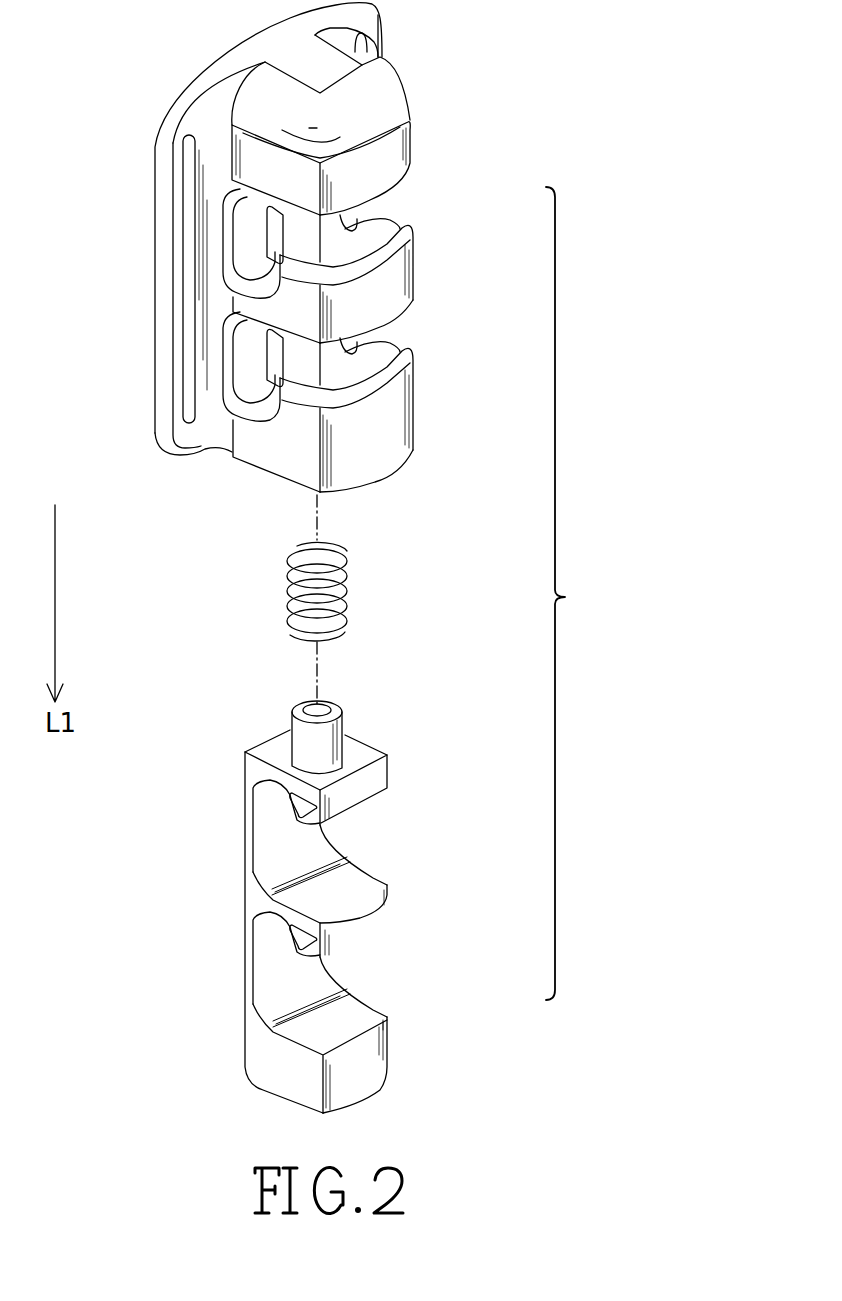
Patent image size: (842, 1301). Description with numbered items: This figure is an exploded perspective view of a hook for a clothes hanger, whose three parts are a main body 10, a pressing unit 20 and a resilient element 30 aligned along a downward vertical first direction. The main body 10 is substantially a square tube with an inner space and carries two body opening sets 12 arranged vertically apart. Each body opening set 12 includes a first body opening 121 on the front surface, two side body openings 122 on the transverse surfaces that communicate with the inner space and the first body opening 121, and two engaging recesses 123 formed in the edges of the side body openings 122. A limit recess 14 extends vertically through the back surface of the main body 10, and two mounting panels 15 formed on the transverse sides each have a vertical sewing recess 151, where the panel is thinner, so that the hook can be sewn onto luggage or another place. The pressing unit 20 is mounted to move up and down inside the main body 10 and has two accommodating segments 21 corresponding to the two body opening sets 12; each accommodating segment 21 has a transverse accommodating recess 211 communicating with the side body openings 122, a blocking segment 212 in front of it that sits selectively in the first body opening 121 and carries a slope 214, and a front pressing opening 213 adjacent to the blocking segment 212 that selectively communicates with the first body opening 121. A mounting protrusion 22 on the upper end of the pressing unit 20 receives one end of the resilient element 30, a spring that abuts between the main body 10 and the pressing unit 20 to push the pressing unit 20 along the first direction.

The main body 10 is at (413, 60).
The body opening set 12 is at (420, 180).
The first body opening 121 is at (345, 212).
The side body opening 122 is at (262, 212).
The engaging recess 123 is at (252, 250).
The limit recess 14 is at (280, 353).
The mounting panel 15 is at (162, 267).
The sewing recess 151 is at (188, 320).
The resilient element 30 is at (348, 578).
The pressing unit 20 is at (392, 745).
The mounting protrusion 22 is at (338, 715).
The accommodating segment 21 is at (395, 888).
The accommodating recess 211 is at (258, 862).
The blocking segment 212 is at (335, 818).
The front pressing opening 213 is at (352, 866).
The slope 214 is at (335, 835).